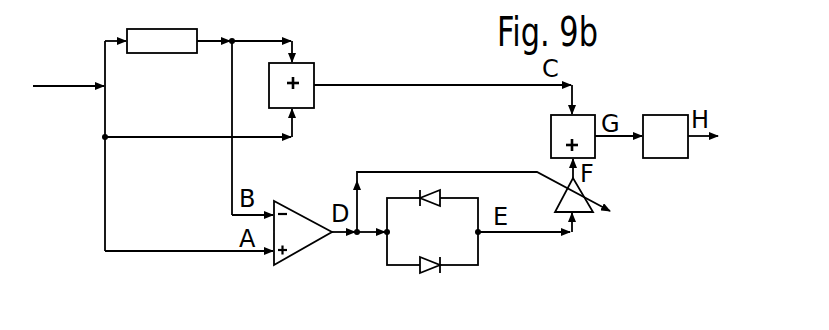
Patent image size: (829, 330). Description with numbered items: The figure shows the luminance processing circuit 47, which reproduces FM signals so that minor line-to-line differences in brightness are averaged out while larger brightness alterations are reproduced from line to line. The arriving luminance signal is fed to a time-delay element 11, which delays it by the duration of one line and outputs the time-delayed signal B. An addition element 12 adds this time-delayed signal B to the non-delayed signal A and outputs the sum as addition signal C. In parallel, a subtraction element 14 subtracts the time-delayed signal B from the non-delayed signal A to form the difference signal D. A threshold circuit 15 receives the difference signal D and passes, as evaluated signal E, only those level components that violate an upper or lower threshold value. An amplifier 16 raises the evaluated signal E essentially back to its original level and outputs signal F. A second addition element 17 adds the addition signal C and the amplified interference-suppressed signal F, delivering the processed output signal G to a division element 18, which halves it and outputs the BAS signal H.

The time-delay element 11 is at (178, 54).
The addition element 12 is at (269, 77).
The luminance processing circuit 47 is at (376, 66).
The subtraction element 14 is at (300, 246).
The threshold circuit 15 is at (387, 262).
The amplifier 16 is at (578, 192).
The second addition element 17 is at (551, 130).
The division element 18 is at (665, 115).